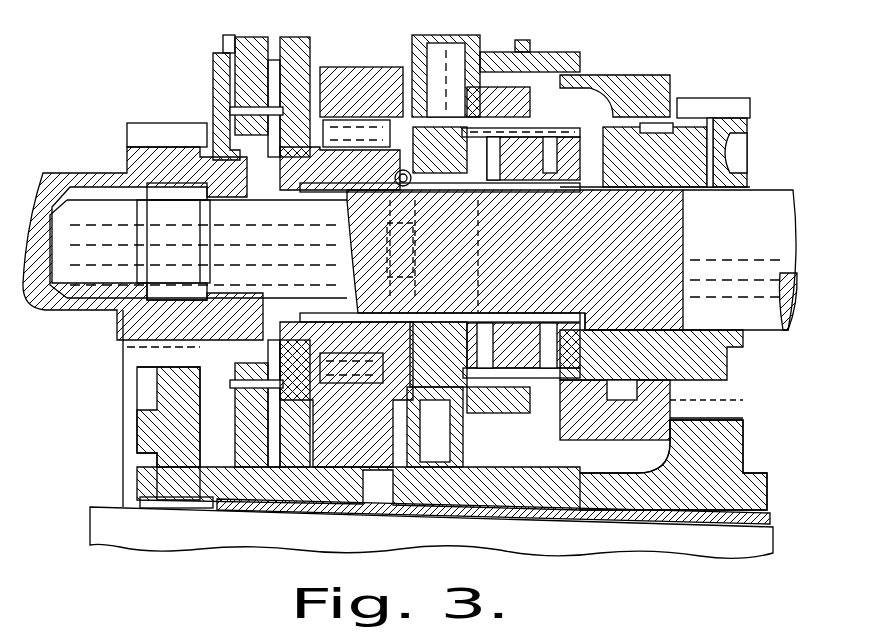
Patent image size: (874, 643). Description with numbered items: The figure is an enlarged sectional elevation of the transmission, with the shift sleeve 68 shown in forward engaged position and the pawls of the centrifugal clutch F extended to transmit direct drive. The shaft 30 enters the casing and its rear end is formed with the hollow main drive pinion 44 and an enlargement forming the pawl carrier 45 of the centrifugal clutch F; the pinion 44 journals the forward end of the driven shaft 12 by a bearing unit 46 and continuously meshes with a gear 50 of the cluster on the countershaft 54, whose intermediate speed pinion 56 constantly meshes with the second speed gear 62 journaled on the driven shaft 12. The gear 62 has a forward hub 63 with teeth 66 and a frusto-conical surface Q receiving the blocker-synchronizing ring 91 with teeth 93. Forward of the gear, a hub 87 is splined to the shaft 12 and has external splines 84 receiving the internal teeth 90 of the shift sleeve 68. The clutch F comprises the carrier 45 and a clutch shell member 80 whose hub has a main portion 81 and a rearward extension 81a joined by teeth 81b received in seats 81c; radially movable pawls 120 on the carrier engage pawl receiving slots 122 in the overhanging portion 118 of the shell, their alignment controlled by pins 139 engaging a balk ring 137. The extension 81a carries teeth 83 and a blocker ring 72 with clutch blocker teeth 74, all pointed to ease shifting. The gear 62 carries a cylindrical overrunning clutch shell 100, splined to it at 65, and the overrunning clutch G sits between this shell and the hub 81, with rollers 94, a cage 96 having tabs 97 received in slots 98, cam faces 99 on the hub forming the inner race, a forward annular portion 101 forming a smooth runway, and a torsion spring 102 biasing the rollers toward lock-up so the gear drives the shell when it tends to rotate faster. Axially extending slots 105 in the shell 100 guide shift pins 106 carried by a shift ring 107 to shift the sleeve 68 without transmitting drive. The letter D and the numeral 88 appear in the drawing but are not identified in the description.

The driven shaft 12 is at (748, 246).
The shaft 30 is at (52, 312).
The main drive pinion 44 is at (140, 125).
The pawl carrier 45 is at (218, 110).
The bearing unit 46 is at (165, 203).
The gear 50 is at (140, 385).
The countershaft 54 is at (275, 537).
The intermediate speed pinion 56 is at (742, 437).
The second speed gear 62 is at (740, 100).
The hub 63 is at (668, 170).
The spline 65 is at (648, 386).
The teeth 66 is at (649, 121).
The shift sleeve 68 is at (497, 101).
The synchronizing and blocker ring 72 is at (438, 257).
The clutch blocker teeth 74 is at (490, 107).
The clutch shell member 80 is at (305, 46).
The main portion of hub 81 is at (491, 250).
The rearwardly projecting extension 81a is at (358, 420).
The teeth 81b is at (385, 250).
The seats 81c is at (350, 220).
The teeth 83 is at (435, 277).
The external splines 84 is at (545, 129).
The hub 87 is at (517, 167).
The spacer 88 is at (500, 405).
The internal teeth 90 is at (523, 252).
The blocker-synchronizing ring 91 is at (600, 362).
The teeth 93 is at (602, 104).
The rollers 94 is at (340, 168).
The cage 96 is at (366, 139).
The tabs 97 is at (385, 172).
The slots 98 is at (402, 188).
The cam faces 99 is at (350, 356).
The overrunning clutch shell 100 is at (618, 75).
The forward annular portion 101 is at (345, 432).
The torsion spring 102 is at (418, 193).
The axially extending slots 105 is at (558, 73).
The shift pins 106 is at (450, 43).
The shift ring 107 is at (530, 42).
The overhanging portion 118 is at (224, 40).
The pawls 120 is at (262, 37).
The pawl receiving slots 122 is at (240, 478).
The balk ring 137 is at (308, 159).
The pins 139 is at (240, 98).
The dimension line D is at (475, 298).
The centrifugal clutch F is at (205, 68).
The overrunning clutch G is at (367, 67).
The frusto-conically shaped surface Q is at (588, 173).